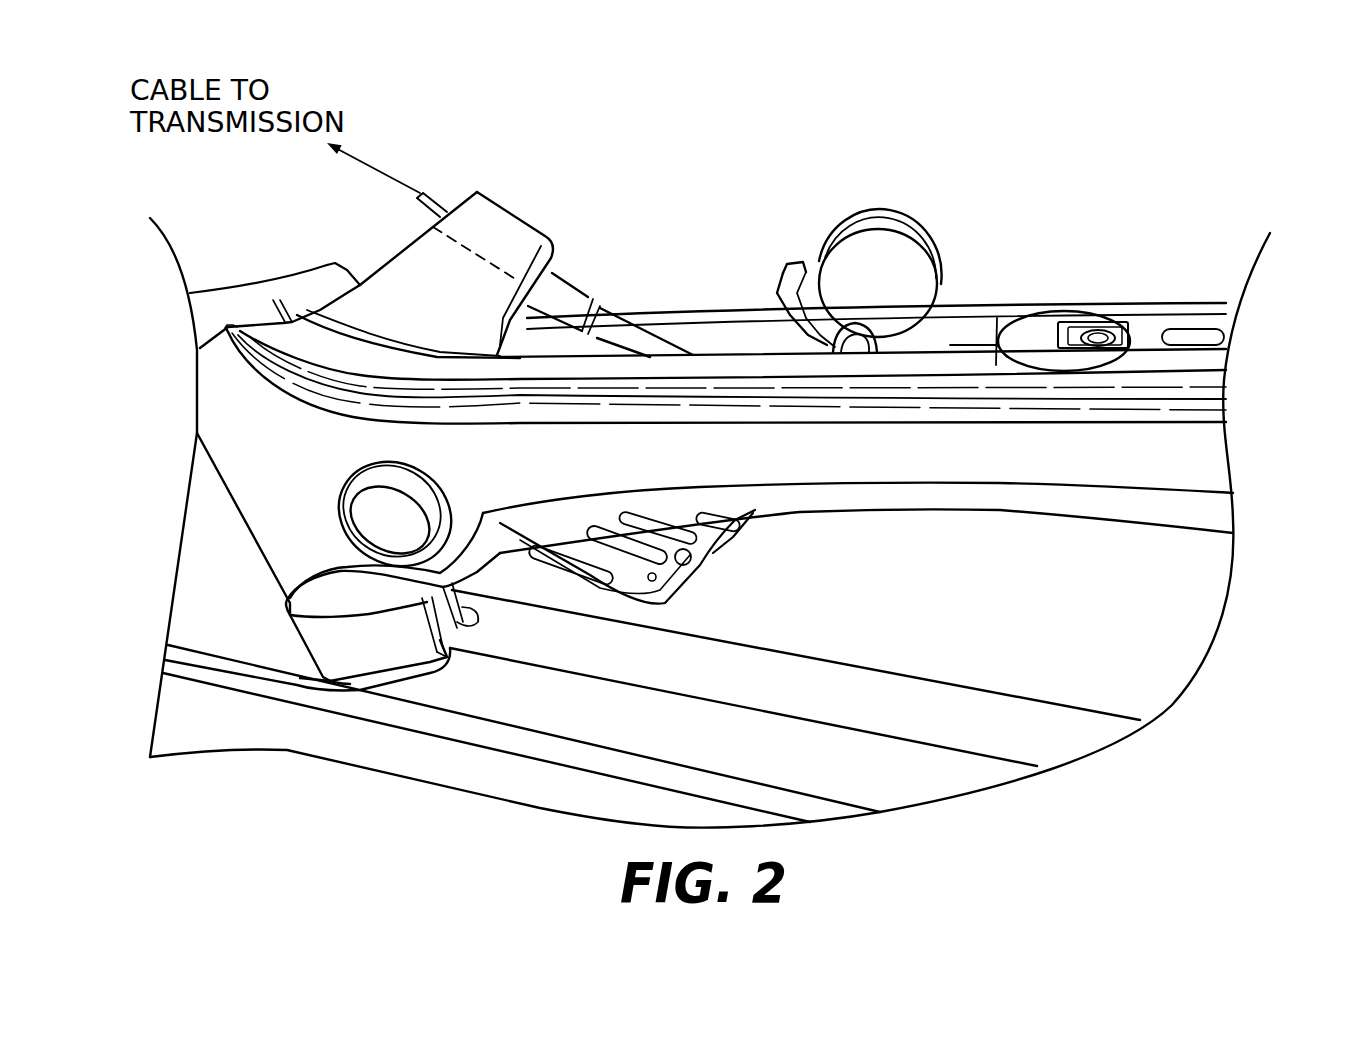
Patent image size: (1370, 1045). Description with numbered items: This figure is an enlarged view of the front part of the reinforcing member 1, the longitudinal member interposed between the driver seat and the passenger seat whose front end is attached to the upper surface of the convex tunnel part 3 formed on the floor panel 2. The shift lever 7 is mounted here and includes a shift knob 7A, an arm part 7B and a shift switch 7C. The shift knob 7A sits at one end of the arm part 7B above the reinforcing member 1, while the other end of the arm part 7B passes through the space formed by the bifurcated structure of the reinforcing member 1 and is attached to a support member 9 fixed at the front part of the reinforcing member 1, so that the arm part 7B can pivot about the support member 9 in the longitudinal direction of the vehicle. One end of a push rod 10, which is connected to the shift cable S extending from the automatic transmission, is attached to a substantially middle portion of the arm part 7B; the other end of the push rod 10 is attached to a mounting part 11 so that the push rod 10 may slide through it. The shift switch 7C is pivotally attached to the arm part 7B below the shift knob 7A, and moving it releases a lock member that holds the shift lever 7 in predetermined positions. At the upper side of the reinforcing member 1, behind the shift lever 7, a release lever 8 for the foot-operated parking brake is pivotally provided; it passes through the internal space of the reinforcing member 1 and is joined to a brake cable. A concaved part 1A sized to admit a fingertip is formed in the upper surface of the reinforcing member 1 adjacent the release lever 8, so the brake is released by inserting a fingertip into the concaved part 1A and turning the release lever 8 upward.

The reinforcing member 1 is at (1197, 470).
The concaved part 1A is at (1106, 294).
The floor panel 2 is at (273, 727).
The tunnel part 3 is at (855, 757).
The shift lever 7 is at (870, 212).
The shift knob 7A is at (900, 217).
The arm part 7B is at (740, 527).
The shift switch 7C is at (796, 266).
The release lever 8 is at (1150, 340).
The support member 9 is at (648, 617).
The push rod 10 is at (613, 307).
The mounting part 11 is at (445, 212).
The shift cable S is at (430, 200).